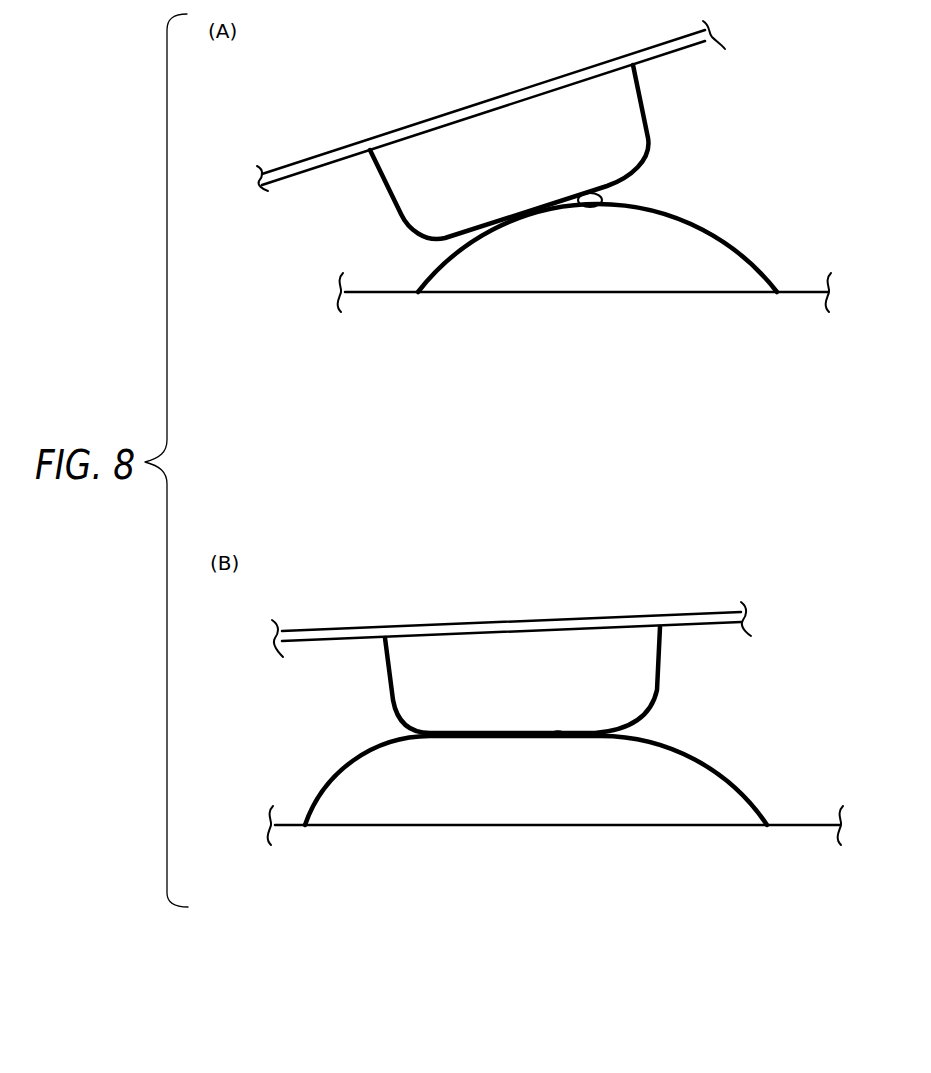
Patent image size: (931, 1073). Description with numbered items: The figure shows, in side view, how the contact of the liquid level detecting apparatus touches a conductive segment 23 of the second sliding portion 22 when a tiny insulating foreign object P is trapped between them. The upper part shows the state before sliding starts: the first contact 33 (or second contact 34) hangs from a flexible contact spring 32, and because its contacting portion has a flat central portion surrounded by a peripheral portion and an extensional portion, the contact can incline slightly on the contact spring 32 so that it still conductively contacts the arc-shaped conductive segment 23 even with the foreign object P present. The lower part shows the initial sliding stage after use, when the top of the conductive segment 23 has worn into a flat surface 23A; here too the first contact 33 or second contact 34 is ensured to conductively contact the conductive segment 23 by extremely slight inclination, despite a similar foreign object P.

The contact spring 32 is at (333, 151).
The first contact 33 is at (437, 378).
The second contact 34 is at (490, 138).
The conductive segment 23 is at (555, 557).
The second sliding portion 22 is at (720, 272).
The flat surface 23A is at (637, 705).
The insulating foreign object P is at (601, 198).